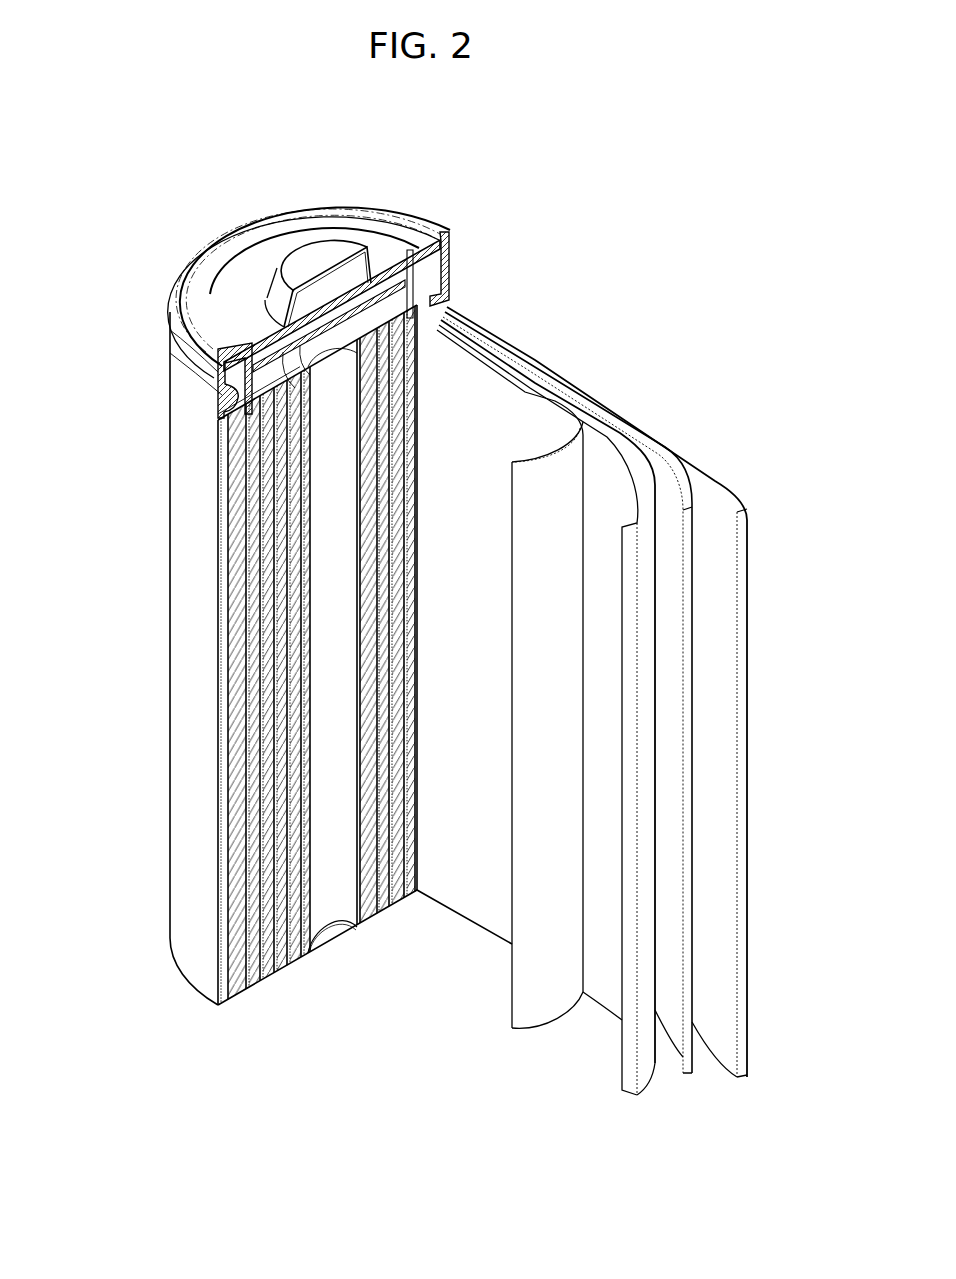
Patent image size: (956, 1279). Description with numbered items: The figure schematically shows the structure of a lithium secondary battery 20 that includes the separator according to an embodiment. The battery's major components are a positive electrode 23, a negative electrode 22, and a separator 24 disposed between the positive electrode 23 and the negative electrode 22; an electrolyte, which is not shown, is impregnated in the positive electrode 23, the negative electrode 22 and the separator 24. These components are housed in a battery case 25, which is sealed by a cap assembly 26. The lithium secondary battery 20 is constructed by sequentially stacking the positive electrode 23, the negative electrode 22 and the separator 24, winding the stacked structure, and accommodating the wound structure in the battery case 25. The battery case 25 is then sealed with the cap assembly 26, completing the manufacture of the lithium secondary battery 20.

The lithium secondary battery 20 is at (620, 164).
The negative electrode 22 is at (730, 490).
The positive electrode 23 is at (607, 438).
The separator 24 is at (518, 383).
The battery case 25 is at (183, 652).
The cap assembly 26 is at (305, 248).